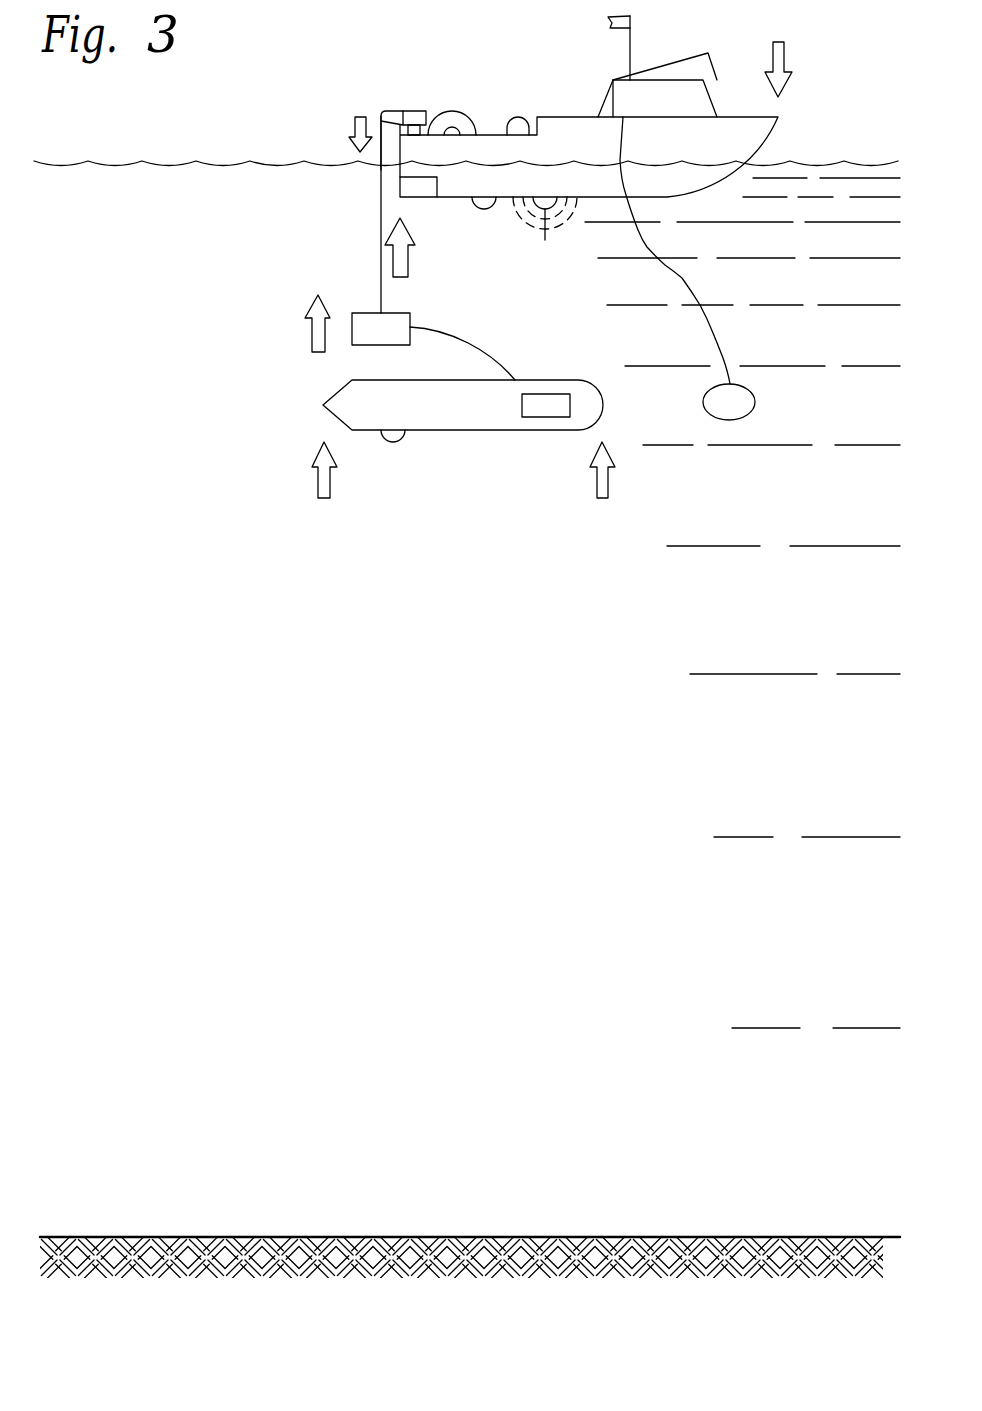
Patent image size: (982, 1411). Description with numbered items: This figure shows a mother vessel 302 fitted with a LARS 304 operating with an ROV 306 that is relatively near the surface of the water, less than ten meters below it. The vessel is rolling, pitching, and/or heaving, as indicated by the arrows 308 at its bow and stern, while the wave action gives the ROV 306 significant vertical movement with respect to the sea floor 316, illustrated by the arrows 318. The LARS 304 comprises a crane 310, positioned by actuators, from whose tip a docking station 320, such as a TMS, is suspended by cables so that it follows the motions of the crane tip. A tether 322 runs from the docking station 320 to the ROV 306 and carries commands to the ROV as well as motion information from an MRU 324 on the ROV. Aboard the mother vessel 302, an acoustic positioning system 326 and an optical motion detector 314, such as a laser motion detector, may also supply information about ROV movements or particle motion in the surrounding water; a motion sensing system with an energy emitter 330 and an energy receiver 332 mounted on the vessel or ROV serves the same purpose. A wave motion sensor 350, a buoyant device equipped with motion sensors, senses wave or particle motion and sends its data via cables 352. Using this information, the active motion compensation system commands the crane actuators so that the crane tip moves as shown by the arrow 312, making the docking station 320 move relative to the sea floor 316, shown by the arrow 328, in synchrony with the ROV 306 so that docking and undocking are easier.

The mother vessel 302 is at (574, 117).
The LARS 304 is at (322, 22).
The ROV 306 is at (483, 430).
The arrows 308 is at (786, 57).
The crane 310 is at (399, 110).
The arrow 312 is at (352, 127).
The optical motion detector 314 is at (512, 118).
The sea floor 316 is at (777, 1237).
The arrows 318 is at (316, 483).
The docking station 320 is at (395, 313).
The tether 322 is at (477, 347).
The MRU 324 is at (547, 417).
The acoustic positioning system 326 is at (545, 234).
The arrow 328 is at (310, 335).
The energy emitter 330 is at (480, 208).
The energy receiver 332 is at (389, 442).
The wave motion sensor 350 is at (756, 402).
The cables 352 is at (683, 281).